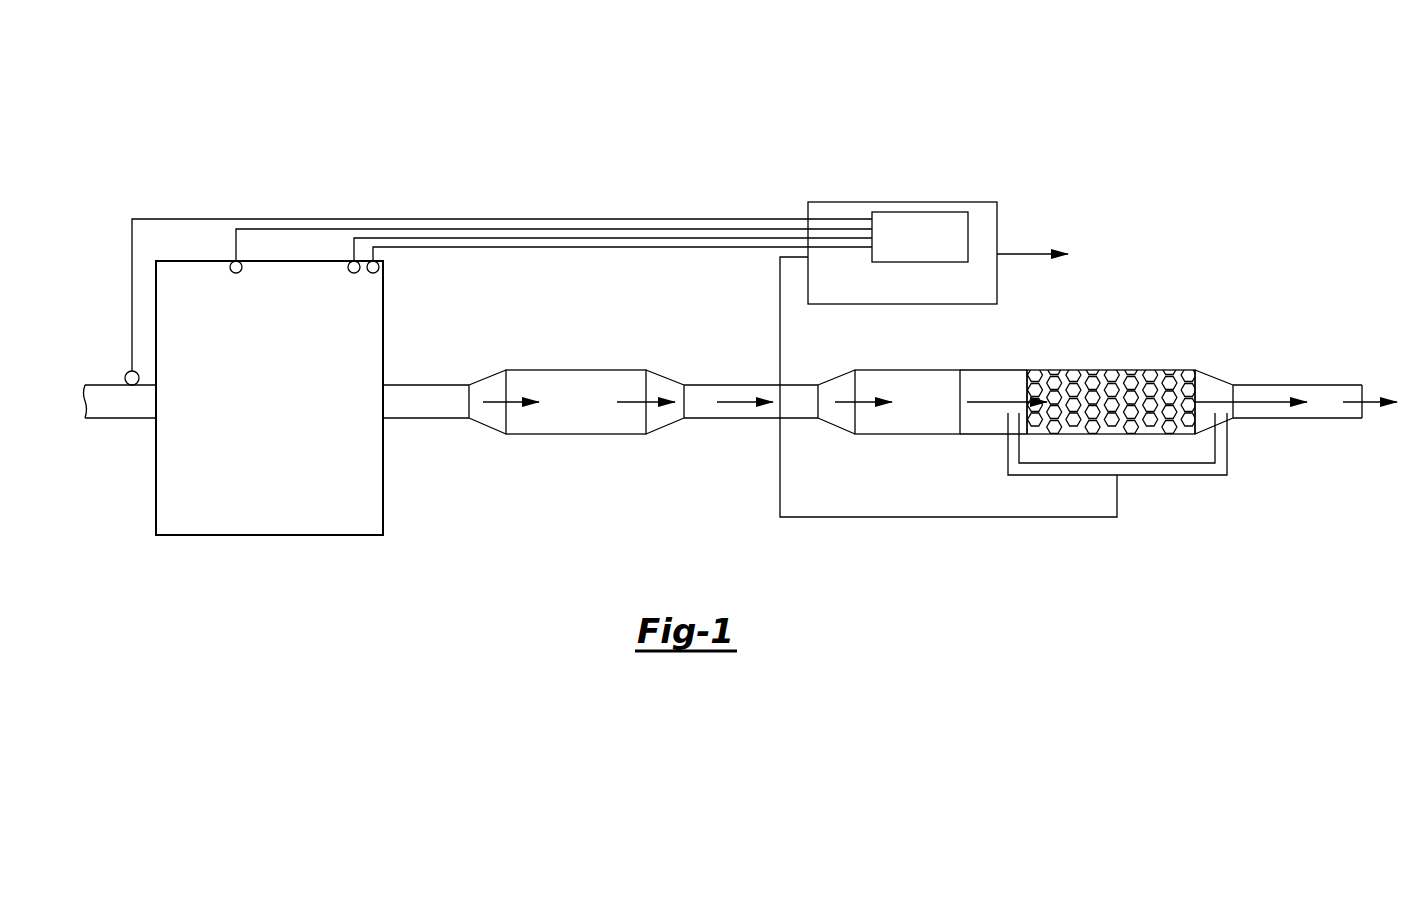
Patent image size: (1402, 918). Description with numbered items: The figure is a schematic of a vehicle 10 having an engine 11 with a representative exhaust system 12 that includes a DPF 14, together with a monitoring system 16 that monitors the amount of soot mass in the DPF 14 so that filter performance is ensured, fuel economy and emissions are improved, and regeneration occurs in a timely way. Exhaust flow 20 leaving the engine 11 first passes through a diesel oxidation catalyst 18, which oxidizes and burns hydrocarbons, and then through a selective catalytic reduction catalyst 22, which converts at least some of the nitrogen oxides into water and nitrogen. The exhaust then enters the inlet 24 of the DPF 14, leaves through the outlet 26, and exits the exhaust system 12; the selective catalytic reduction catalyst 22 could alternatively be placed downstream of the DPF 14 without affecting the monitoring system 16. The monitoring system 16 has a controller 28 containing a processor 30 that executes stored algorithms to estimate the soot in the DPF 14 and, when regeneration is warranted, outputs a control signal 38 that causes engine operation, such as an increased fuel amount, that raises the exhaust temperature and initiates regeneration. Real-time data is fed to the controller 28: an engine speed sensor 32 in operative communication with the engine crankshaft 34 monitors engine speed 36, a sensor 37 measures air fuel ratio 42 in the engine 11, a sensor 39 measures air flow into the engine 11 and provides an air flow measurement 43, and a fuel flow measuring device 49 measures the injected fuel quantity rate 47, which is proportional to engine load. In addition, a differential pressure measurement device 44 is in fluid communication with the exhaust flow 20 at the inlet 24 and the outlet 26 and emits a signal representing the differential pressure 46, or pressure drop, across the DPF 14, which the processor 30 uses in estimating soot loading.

The vehicle 10 is at (210, 104).
The engine 11 is at (282, 386).
The exhaust system 12 is at (692, 480).
The DPF 14 is at (1120, 383).
The monitoring system 16 is at (1058, 192).
The diesel oxidation catalyst 18 is at (587, 409).
The exhaust flow 20 is at (498, 403).
The selective catalytic reduction catalyst 22 is at (934, 409).
The inlet 24 is at (1020, 383).
The outlet 26 is at (1197, 385).
The controller 28 is at (908, 202).
The processor 30 is at (934, 248).
The engine speed sensor 32 is at (125, 376).
The engine crankshaft 34 is at (117, 418).
The engine speed 36 is at (450, 218).
The sensor 37 is at (373, 274).
The control signal 38 is at (1027, 255).
The sensor 39 is at (354, 274).
The air fuel ratio 42 is at (503, 248).
The air flow measurement 43 is at (592, 238).
The differential pressure measurement device 44 is at (1175, 477).
The differential pressure 46 is at (948, 518).
The injected fuel quantity rate 47 is at (525, 228).
The fuel flow measuring device 49 is at (236, 274).